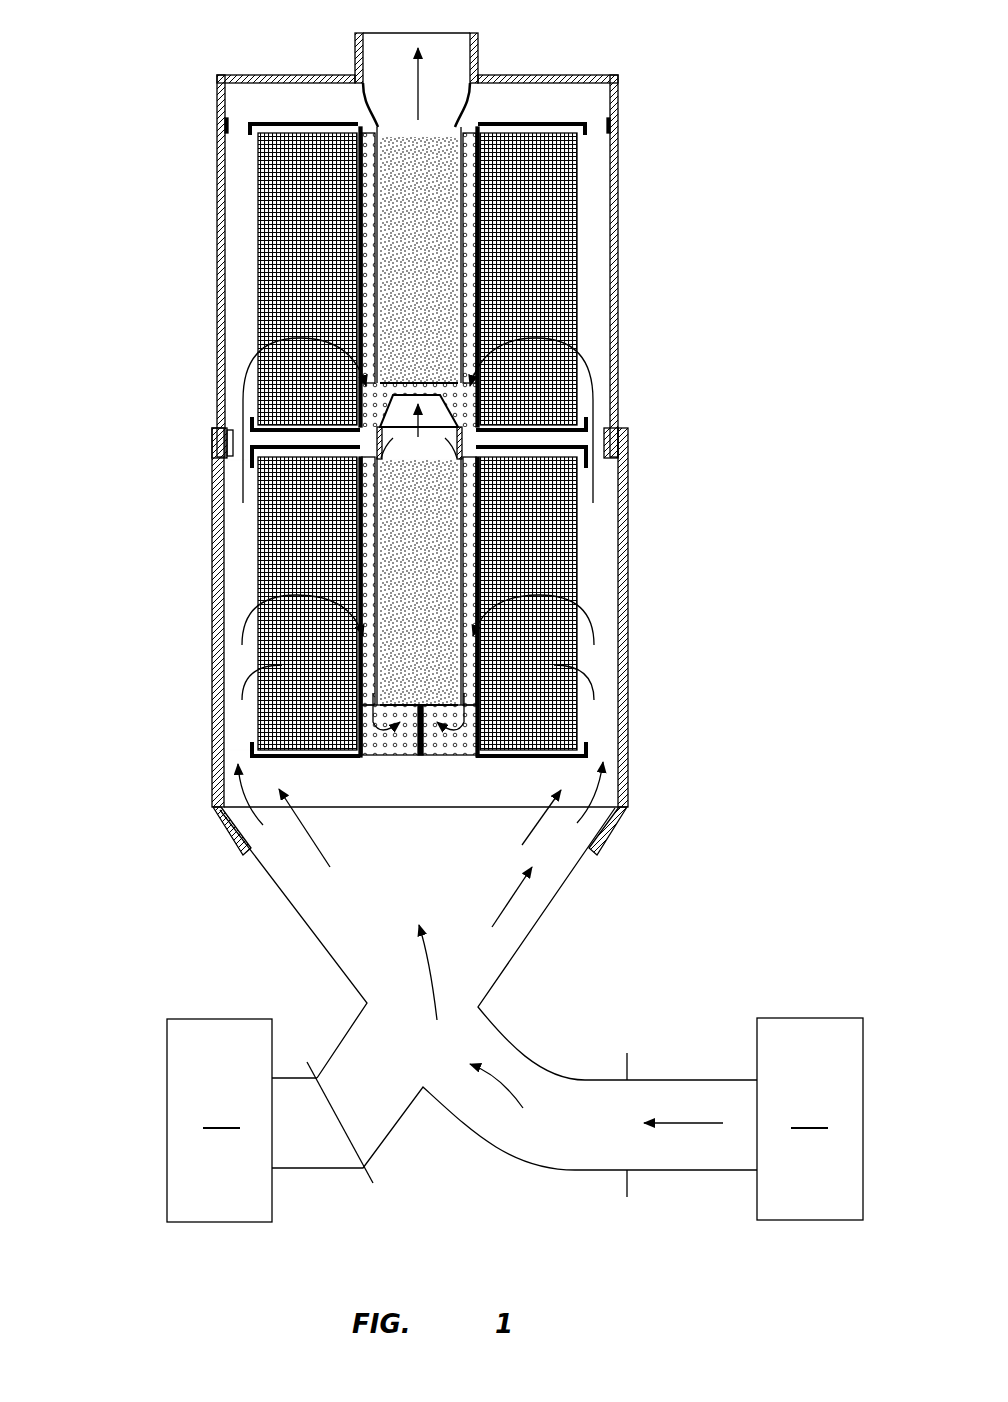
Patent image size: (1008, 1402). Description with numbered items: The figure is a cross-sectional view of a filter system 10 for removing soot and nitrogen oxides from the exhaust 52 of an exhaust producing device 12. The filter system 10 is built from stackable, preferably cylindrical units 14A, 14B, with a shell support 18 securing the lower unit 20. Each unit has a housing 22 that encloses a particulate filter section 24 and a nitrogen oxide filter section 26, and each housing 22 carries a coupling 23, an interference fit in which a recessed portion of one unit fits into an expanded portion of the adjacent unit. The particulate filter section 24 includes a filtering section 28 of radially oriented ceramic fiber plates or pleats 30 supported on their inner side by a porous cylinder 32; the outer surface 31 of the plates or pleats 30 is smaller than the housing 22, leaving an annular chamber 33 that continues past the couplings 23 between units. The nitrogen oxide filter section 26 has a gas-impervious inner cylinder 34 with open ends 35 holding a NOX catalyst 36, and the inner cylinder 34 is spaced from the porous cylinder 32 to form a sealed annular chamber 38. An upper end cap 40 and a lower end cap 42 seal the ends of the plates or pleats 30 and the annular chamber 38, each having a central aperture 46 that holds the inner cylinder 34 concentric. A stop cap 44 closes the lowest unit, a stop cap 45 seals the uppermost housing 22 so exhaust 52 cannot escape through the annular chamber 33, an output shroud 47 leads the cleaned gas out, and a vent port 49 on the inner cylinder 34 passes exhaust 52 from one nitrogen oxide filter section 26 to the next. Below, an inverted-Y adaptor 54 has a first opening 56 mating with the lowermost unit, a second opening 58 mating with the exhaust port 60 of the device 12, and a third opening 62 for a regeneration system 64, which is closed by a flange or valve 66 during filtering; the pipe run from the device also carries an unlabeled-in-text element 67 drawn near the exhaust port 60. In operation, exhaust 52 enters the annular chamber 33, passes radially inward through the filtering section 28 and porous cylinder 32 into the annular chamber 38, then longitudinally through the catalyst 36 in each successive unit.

The filter system 10 is at (459, 430).
The exhaust producing device 12 is at (810, 1119).
The attachable unit 14A is at (475, 228).
The attachable unit 14B is at (430, 644).
The shell support 18 is at (624, 673).
The lower unit 20 is at (616, 635).
The housing 22 is at (618, 320).
The coupling 23 is at (208, 436).
The particulate filter section 24 is at (300, 237).
The nitrogen oxide filter section 26 is at (432, 212).
The filtering section 28 is at (292, 195).
The plates or pleats 30 is at (292, 388).
The outer surface 31 is at (578, 525).
The porous cylinder 32 is at (358, 170).
The annular chamber 33 is at (243, 718).
The inner cylinder 34 is at (358, 365).
The open ends 35 is at (407, 137).
The nitrogen-oxide removing catalyst 36 is at (384, 283).
The annular chamber 38 is at (367, 328).
The upper end cap 40 is at (292, 450).
The lower end cap 42 is at (285, 422).
The stop cap 44 is at (453, 757).
The stop cap 45 is at (270, 122).
The central aperture 46 is at (462, 483).
The filter system output shroud 47 is at (540, 76).
The vent port 49 is at (470, 416).
The exhaust 52 is at (590, 375).
The adaptor 54 is at (518, 952).
The first opening 56 is at (348, 808).
The second opening 58 is at (685, 1092).
The exhaust port 60 is at (737, 1078).
The third opening 62 is at (360, 1042).
The regeneration system 64 is at (219, 1120).
The flange or valve 66 is at (357, 1147).
The pipe section 67 is at (628, 1188).